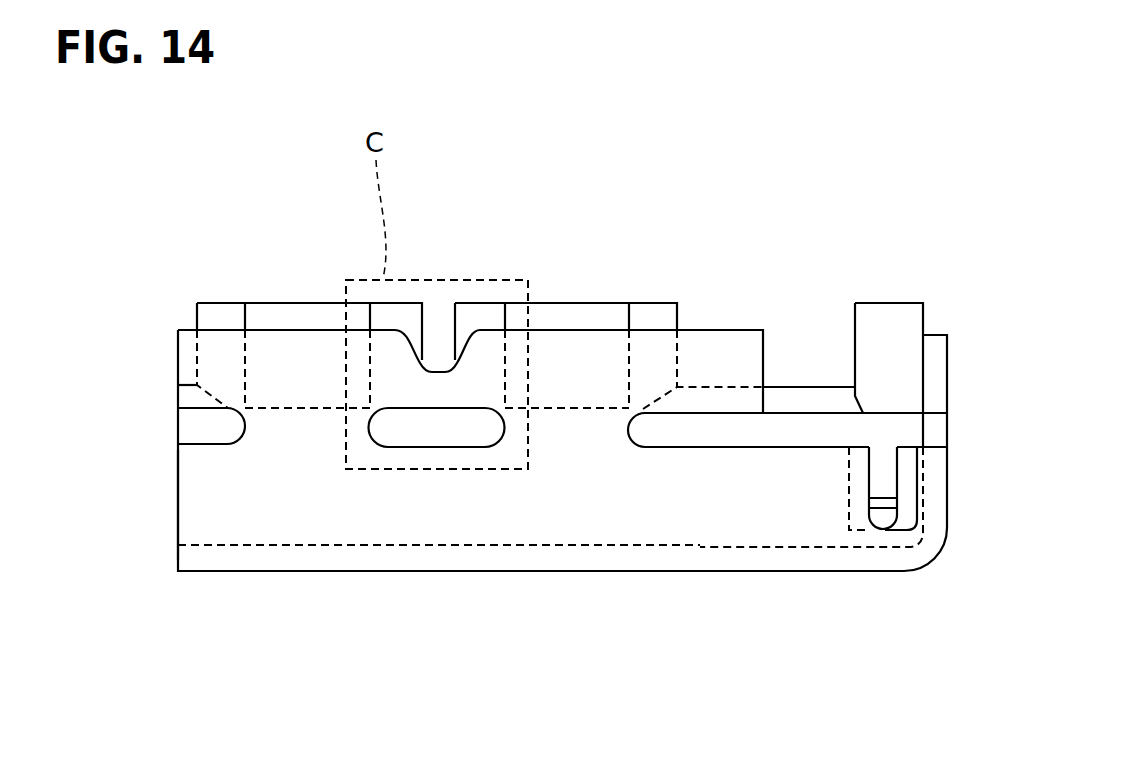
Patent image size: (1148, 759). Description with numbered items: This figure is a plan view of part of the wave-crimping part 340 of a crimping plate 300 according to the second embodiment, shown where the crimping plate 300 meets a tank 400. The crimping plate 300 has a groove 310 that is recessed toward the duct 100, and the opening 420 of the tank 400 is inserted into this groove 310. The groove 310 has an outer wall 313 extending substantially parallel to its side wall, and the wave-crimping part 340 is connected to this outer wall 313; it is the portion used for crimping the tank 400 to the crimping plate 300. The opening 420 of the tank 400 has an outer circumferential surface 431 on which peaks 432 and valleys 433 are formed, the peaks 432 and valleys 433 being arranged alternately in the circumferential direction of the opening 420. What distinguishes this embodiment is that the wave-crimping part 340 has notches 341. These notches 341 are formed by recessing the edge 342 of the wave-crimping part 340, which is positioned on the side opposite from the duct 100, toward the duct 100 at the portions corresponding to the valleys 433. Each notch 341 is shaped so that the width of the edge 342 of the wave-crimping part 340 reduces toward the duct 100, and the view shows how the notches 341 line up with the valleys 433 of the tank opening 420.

The duct 100 is at (353, 598).
The crimping plate 300 is at (633, 573).
The groove 310 is at (202, 557).
The outer wall 313 is at (208, 500).
The wave-crimping part 340 is at (220, 370).
The notch 341 is at (460, 332).
The edge 342 is at (327, 329).
The tank 400 is at (664, 303).
The opening 420 is at (431, 549).
The outer circumferential surface 431 is at (222, 287).
The peak 432 is at (265, 317).
The valley 433 is at (438, 340).